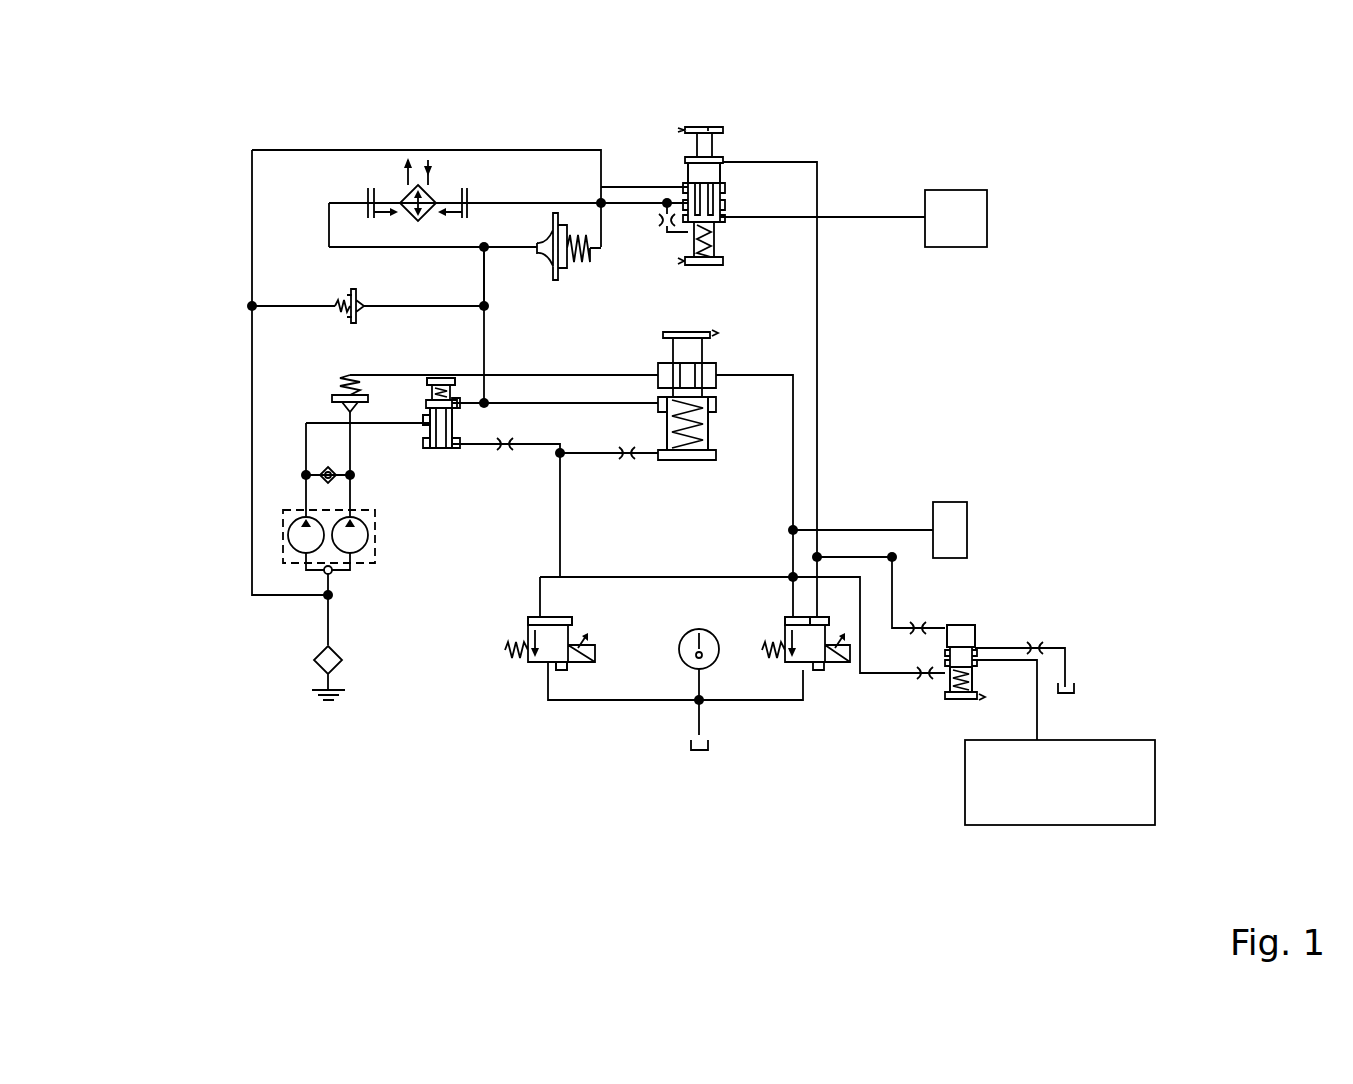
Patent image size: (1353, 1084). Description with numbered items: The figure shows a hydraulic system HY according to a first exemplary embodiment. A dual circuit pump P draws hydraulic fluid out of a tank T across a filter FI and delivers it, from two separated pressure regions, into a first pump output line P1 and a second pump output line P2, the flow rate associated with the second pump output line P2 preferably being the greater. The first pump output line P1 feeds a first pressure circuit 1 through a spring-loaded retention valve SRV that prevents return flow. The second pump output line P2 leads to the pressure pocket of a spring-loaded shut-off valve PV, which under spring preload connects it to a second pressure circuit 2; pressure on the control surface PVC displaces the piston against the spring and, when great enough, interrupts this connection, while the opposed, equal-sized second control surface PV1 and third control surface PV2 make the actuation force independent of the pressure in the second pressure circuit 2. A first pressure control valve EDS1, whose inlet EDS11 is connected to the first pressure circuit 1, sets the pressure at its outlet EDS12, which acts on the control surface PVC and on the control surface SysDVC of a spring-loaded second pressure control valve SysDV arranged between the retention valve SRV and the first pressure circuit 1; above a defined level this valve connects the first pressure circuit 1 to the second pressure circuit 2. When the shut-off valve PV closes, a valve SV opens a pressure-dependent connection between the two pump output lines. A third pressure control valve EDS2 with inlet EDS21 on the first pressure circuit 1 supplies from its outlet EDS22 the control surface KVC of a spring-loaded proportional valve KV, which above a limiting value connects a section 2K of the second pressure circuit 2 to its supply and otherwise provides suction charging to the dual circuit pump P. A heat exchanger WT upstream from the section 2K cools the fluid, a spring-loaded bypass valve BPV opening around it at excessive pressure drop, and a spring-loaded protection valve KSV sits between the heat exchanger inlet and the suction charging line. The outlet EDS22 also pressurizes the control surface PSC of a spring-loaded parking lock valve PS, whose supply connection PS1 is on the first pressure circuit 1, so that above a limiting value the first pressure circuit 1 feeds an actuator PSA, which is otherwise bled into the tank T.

The hydraulic system HY is at (1030, 133).
The dual circuit pump P is at (267, 540).
The first pump output line P1 is at (350, 448).
The second pump output line P2 is at (306, 461).
The valve SV is at (315, 484).
The filter FI is at (305, 651).
The tank T is at (295, 689).
The protection valve KSV is at (324, 294).
The retention valve SRV is at (323, 386).
The shut-off valve PV is at (430, 464).
The control surface PVC is at (440, 447).
The second control surface PV1 is at (458, 378).
The third control surface PV2 is at (427, 405).
The second pressure circuit 2 is at (488, 278).
The heat exchanger WT is at (413, 140).
The bypass valve BPV is at (575, 208).
The proportional valve KV is at (740, 187).
The control surface KVC is at (722, 160).
The section 2K is at (956, 218).
The first pressure circuit 1 is at (950, 530).
The second pressure control valve SysDV is at (745, 403).
The control surface SysDVC is at (694, 462).
The first pressure control valve EDS1 is at (531, 694).
The inlet EDS11 is at (542, 617).
The outlet EDS12 is at (548, 665).
The third pressure control valve EDS2 is at (818, 693).
The inlet EDS21 is at (803, 617).
The outlet EDS22 is at (822, 617).
The parking lock valve PS is at (989, 633).
The control surface PSC is at (975, 625).
The supply connection PS1 is at (947, 672).
The actuator PSA is at (1047, 838).